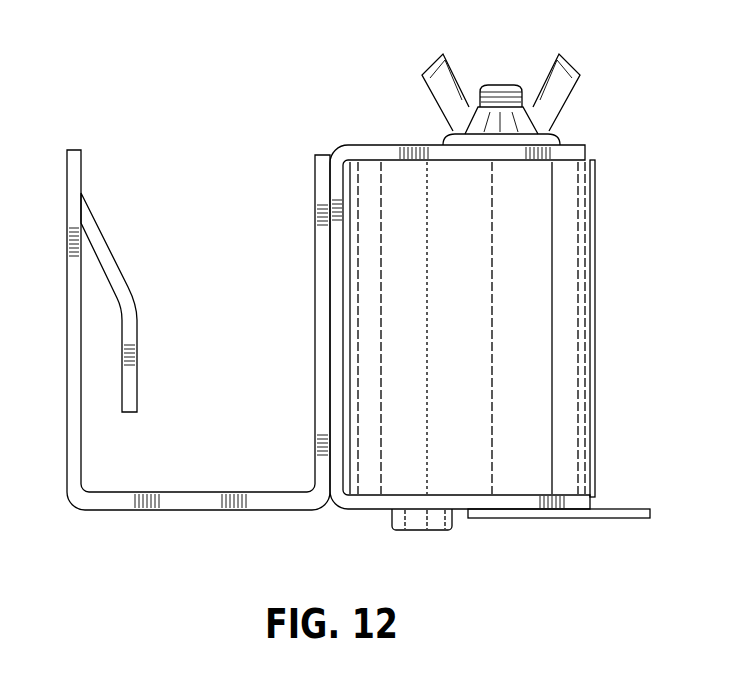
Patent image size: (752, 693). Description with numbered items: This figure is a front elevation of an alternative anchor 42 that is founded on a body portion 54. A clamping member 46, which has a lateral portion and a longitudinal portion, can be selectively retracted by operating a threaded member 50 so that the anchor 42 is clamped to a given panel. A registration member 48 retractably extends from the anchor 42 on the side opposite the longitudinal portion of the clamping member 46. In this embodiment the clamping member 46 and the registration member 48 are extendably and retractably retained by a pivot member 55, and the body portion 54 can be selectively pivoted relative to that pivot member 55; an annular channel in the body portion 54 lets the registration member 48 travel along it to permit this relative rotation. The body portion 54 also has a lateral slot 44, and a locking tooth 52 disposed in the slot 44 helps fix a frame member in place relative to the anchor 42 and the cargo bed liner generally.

The anchor 42 is at (497, 310).
The lateral slot 44 is at (83, 165).
The clamping member 46 is at (555, 518).
The registration member 48 is at (400, 514).
The threaded member 50 is at (582, 94).
The locking tooth 52 is at (126, 278).
The body portion 54 is at (360, 147).
The pivot member 55 is at (596, 243).